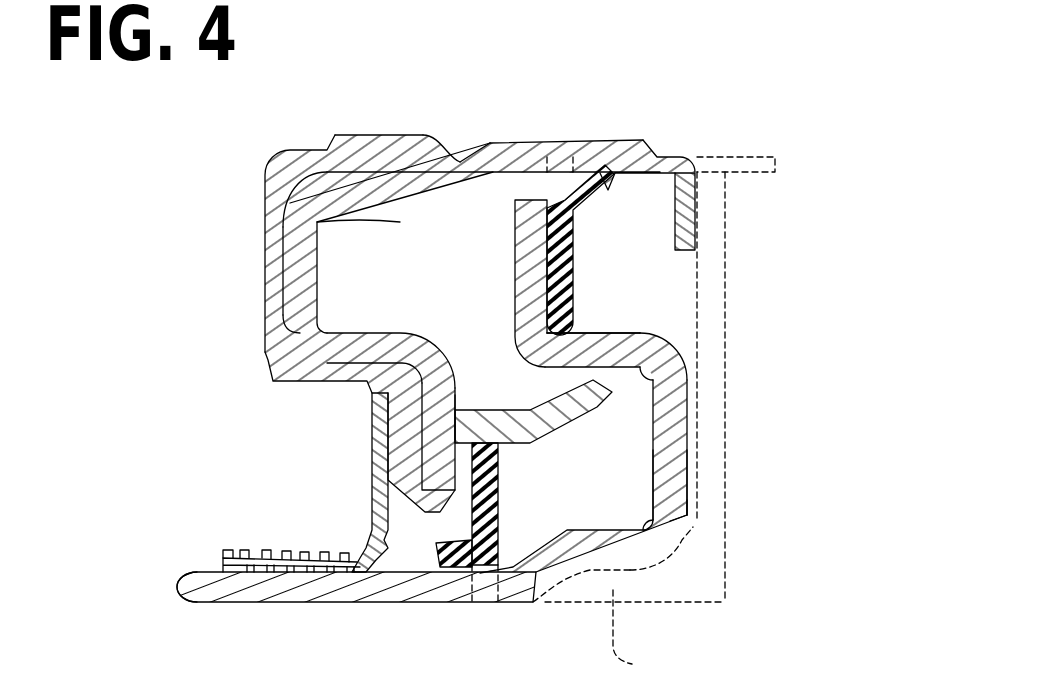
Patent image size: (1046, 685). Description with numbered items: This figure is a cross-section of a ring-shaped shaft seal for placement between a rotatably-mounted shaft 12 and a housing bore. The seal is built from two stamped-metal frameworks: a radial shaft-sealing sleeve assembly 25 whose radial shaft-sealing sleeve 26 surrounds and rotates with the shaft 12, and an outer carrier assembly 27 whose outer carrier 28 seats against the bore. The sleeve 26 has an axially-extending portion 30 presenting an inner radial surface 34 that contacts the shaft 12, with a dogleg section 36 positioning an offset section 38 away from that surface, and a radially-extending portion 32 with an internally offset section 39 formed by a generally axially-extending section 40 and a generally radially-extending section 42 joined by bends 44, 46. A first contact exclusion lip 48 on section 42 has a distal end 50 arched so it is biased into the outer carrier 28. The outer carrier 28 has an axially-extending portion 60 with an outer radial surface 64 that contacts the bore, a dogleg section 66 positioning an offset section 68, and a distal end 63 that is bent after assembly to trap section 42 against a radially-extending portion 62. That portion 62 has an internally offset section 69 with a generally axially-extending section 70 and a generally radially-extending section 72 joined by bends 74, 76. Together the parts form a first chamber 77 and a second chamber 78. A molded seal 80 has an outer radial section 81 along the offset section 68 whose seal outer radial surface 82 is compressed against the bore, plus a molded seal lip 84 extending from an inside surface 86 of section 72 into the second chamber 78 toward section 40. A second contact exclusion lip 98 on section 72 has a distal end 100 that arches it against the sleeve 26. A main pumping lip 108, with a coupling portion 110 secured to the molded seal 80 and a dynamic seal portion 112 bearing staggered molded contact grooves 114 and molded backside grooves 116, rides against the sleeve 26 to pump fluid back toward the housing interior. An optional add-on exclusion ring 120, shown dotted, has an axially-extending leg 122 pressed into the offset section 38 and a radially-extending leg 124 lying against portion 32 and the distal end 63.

The rotatably-mounted shaft 12 is at (808, 163).
The radial shaft-sealing sleeve assembly 25 is at (692, 449).
The radial shaft-sealing sleeve 26 is at (687, 526).
The outer carrier assembly 27 is at (680, 148).
The outer carrier 28 is at (484, 257).
The axially-extending portion 30 is at (350, 621).
The radially-extending portion 32 is at (695, 464).
The inner radial surface 34 is at (400, 598).
The dogleg section 36 is at (553, 573).
The offset section 38 is at (618, 548).
The internally offset section 39 is at (632, 304).
The generally axially-extending section 40 is at (613, 343).
The generally radially-extending section 42 is at (515, 260).
The right angle bend 44 is at (670, 366).
The right angle bend 46 is at (634, 335).
The first contact exclusion lip 48 is at (590, 196).
The distal end 50 is at (612, 187).
The axially-extending portion 60 is at (567, 161).
The radially-extending portion 62 is at (320, 244).
The distal end 63 is at (695, 228).
The outer radial surface 64 is at (555, 140).
The dogleg section 66 is at (470, 182).
The offset section 68 is at (383, 185).
The internally offset section 69 is at (347, 482).
The generally axially-extending section 70 is at (350, 348).
The generally radially-extending section 72 is at (447, 388).
The right angle bend 74 is at (283, 350).
The right angle bend 76 is at (474, 393).
The first chamber 77 is at (277, 231).
The second chamber 78 is at (576, 496).
The molded seal 80 is at (242, 243).
The outer radial section 81 is at (413, 158).
The seal outer radial surface 82 is at (388, 114).
The molded seal lip 84 is at (588, 411).
The inside surface 86 is at (420, 450).
The second contact exclusion lip 98 is at (500, 513).
The distal end 100 is at (452, 558).
The main pumping lip 108 is at (288, 575).
The coupling portion 110 is at (372, 403).
The dynamic seal portion 112 is at (287, 574).
The molded contact groove 114 is at (247, 573).
The molded backside groove 116 is at (248, 554).
The add-on exclusion ring 120 is at (727, 481).
The axially-extending leg 122 is at (626, 660).
The radially-extending leg 124 is at (710, 408).